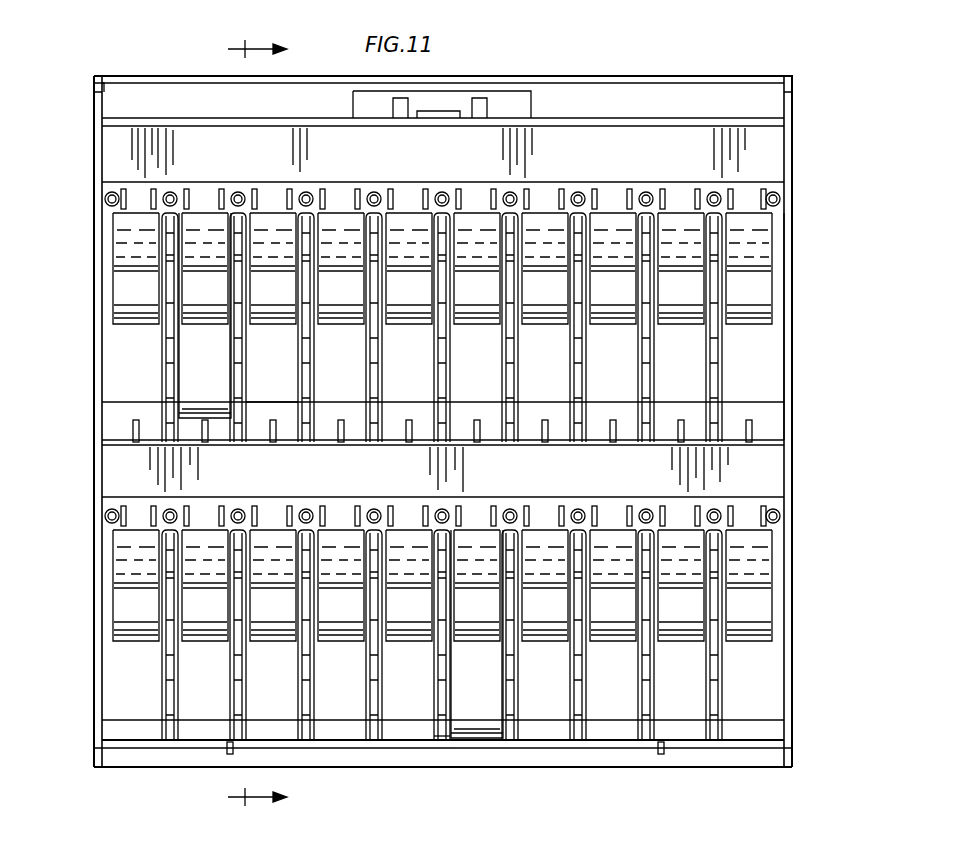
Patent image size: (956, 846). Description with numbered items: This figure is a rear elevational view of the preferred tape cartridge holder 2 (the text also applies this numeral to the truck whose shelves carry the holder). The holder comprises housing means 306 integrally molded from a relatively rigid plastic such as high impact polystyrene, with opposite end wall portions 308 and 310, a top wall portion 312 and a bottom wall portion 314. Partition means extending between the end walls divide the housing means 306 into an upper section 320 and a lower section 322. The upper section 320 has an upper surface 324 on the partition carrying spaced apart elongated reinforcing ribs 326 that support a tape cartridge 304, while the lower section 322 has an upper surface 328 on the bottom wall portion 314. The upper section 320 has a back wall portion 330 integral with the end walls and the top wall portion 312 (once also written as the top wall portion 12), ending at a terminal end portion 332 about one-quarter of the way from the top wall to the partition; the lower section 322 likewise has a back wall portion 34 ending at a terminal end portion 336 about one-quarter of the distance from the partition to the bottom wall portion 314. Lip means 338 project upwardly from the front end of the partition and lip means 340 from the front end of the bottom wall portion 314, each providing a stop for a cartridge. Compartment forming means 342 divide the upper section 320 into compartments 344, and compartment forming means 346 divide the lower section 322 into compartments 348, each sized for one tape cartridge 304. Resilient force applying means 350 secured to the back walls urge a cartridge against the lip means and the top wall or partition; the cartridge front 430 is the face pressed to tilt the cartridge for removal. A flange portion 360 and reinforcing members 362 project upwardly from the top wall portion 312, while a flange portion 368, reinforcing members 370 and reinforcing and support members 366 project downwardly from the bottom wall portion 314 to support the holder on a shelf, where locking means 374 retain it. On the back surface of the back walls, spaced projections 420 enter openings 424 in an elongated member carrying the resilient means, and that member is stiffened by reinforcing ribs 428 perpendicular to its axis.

The holder 2 is at (712, 58).
The top wall portion 12 is at (242, 424).
The lower connector strip 34 is at (235, 482).
The tape cartridge 304 is at (228, 359).
The housing means 306 is at (805, 427).
The end wall portion 308 is at (96, 362).
The end wall portion 310 is at (788, 370).
The top wall portion 312 is at (628, 118).
The bottom wall portion 314 is at (597, 740).
The upper section 320 is at (805, 307).
The lower section 322 is at (805, 566).
The upper surface 324 is at (289, 452).
The reinforcing ribs 326 is at (478, 425).
The upper surface 328 is at (446, 738).
The back wall portion 330 is at (228, 162).
The terminal end portion 332 is at (102, 208).
The terminal end portion 336 is at (105, 532).
The lip means 338 is at (693, 414).
The lip means 340 is at (340, 735).
The compartment forming means 342 is at (372, 376).
The compartments 344 is at (155, 376).
The compartment forming means 346 is at (372, 703).
The compartments 348 is at (145, 702).
The resilient force applying means 350 is at (782, 243).
The flange portion 360 is at (121, 90).
The reinforcing member 362 is at (96, 108).
The reinforcing and support members 366 is at (228, 752).
The flange portion 368 is at (528, 748).
The reinforcing member 370 is at (96, 760).
The locking means 374 is at (440, 110).
The projections 420 is at (512, 192).
The openings 424 is at (650, 192).
The reinforcing ribs 428 is at (350, 189).
The front 430 is at (202, 406).